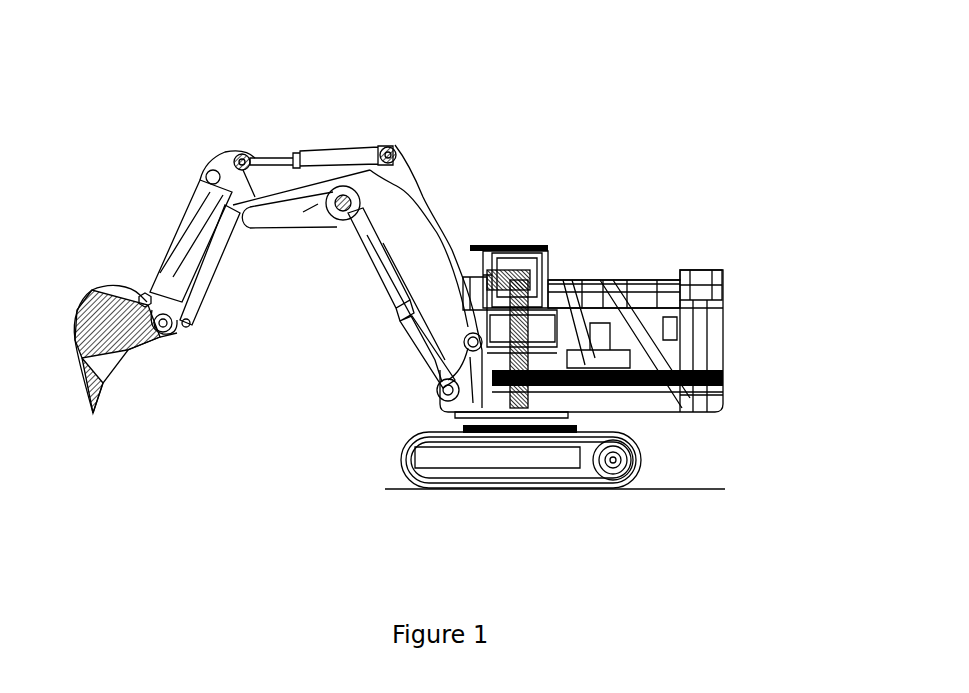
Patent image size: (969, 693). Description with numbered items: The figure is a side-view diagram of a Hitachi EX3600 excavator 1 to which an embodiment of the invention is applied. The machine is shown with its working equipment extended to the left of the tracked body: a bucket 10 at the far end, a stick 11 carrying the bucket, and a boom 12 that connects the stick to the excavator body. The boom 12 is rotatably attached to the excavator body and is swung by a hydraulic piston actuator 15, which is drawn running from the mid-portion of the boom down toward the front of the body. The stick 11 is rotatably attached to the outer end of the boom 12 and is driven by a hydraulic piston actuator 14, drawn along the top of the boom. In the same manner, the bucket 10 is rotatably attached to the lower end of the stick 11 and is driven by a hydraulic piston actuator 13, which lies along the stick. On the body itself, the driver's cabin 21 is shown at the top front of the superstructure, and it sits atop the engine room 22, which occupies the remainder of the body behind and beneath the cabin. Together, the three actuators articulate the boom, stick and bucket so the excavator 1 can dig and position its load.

The excavator 1 is at (596, 98).
The bucket 10 is at (103, 287).
The stick 11 is at (213, 287).
The boom 12 is at (432, 203).
The hydraulic piston actuator 13 is at (178, 227).
The hydraulic piston actuator 14 is at (312, 153).
The hydraulic piston actuator 15 is at (370, 267).
The driver's cabin 21 is at (553, 245).
The engine room 22 is at (623, 334).